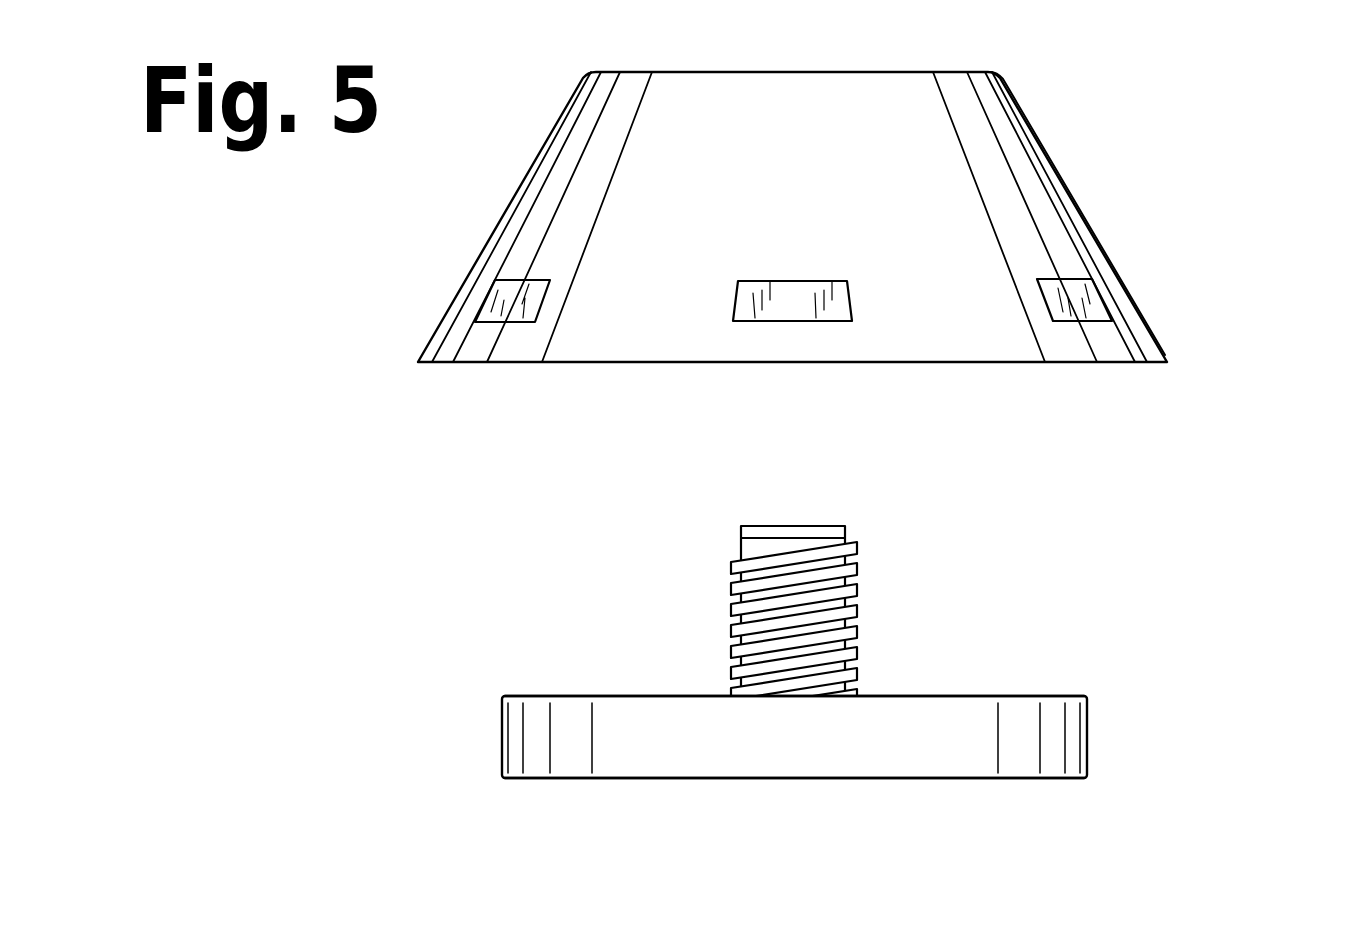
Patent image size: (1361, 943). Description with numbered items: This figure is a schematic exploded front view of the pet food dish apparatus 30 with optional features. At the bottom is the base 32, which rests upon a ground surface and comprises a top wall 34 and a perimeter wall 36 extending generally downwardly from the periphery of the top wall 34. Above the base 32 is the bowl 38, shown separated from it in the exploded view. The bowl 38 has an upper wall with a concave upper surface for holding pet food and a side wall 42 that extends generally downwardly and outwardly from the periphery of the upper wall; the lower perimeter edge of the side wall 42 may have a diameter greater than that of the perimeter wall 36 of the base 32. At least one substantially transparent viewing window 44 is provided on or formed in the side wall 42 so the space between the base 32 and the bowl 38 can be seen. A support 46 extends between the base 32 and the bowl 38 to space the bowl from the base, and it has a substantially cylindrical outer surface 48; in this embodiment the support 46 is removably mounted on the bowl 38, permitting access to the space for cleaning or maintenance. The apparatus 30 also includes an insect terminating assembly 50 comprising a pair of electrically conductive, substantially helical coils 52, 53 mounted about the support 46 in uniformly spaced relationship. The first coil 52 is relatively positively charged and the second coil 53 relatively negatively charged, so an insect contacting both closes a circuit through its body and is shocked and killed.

The pet food dish apparatus 30 is at (407, 471).
The base 32 is at (1048, 733).
The top wall 34 is at (1048, 693).
The perimeter wall 36 is at (1090, 758).
The bowl 38 is at (1005, 197).
The side wall 42 is at (1027, 110).
The viewing window 44 is at (1078, 302).
The support 46 is at (853, 577).
The outer surface 48 is at (750, 547).
The insect terminating assembly 50 is at (668, 615).
The first coil 52 is at (858, 642).
The second coil 53 is at (853, 667).